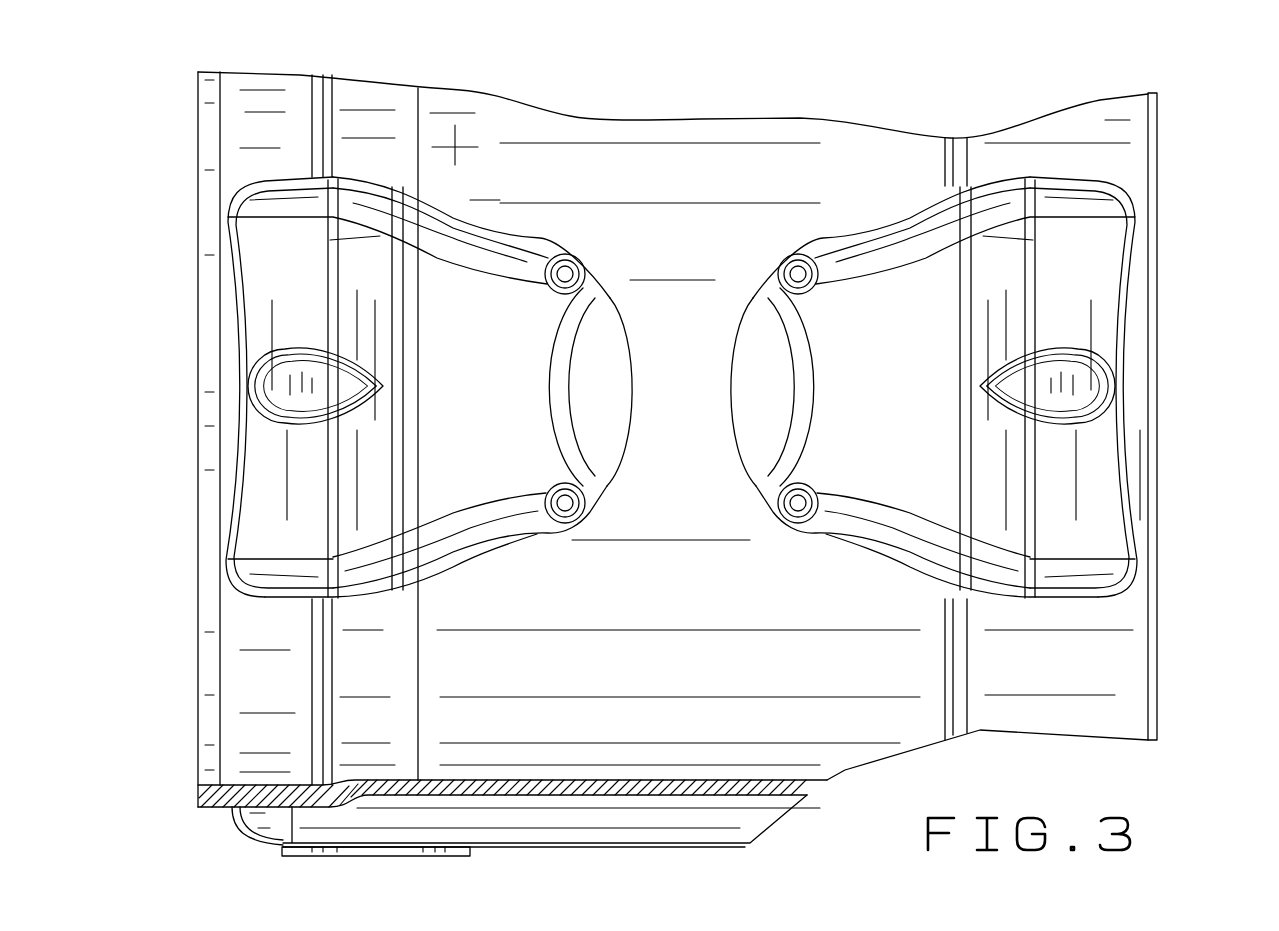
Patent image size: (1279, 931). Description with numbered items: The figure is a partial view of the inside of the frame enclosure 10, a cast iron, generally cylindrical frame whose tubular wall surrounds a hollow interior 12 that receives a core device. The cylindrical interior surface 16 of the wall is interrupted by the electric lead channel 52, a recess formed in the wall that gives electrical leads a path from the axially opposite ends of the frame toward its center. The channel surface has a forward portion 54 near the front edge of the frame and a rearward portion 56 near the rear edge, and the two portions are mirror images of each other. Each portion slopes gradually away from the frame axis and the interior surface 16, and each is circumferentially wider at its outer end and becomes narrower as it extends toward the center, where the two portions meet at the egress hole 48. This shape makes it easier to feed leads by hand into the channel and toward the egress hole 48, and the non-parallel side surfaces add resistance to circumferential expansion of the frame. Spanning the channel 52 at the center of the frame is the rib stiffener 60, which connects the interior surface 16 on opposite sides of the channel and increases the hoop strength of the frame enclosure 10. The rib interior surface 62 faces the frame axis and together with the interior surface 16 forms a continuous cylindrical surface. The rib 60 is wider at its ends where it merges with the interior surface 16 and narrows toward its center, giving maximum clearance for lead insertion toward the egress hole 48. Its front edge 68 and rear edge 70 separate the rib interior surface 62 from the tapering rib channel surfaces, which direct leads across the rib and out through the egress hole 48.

The frame enclosure 10 is at (1187, 303).
The hollow interior 12 is at (1092, 667).
The cylindrical interior surface 16 is at (470, 666).
The egress hole 48 is at (760, 371).
The electric lead channel 52 is at (437, 341).
The forward portion of the channel surface 54 is at (277, 490).
The rearward portion of the channel surface 56 is at (1095, 497).
The rib stiffener 60 is at (627, 358).
The rib interior surface 62 is at (653, 340).
The front edge of the rib 68 is at (630, 393).
The rear edge of the rib 70 is at (742, 335).